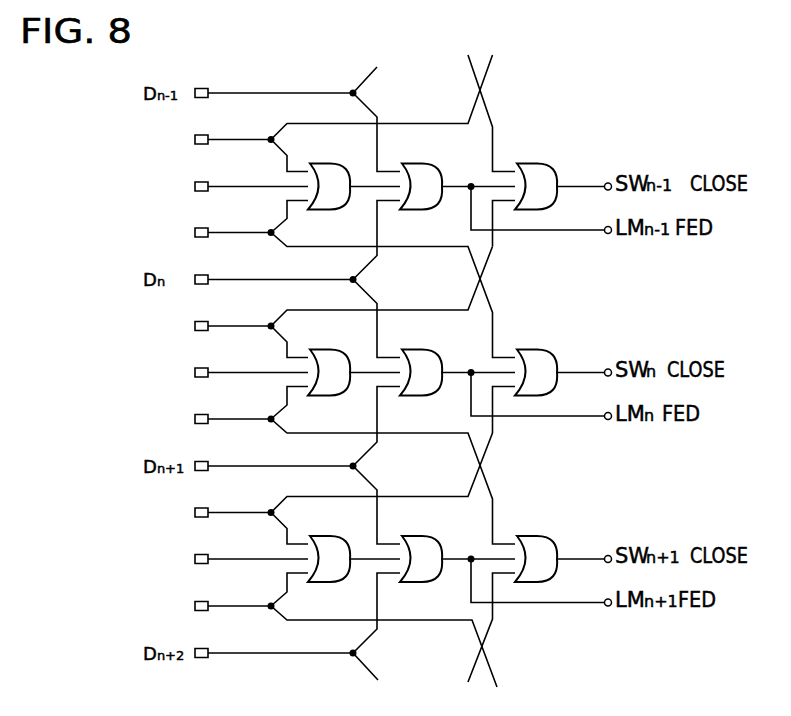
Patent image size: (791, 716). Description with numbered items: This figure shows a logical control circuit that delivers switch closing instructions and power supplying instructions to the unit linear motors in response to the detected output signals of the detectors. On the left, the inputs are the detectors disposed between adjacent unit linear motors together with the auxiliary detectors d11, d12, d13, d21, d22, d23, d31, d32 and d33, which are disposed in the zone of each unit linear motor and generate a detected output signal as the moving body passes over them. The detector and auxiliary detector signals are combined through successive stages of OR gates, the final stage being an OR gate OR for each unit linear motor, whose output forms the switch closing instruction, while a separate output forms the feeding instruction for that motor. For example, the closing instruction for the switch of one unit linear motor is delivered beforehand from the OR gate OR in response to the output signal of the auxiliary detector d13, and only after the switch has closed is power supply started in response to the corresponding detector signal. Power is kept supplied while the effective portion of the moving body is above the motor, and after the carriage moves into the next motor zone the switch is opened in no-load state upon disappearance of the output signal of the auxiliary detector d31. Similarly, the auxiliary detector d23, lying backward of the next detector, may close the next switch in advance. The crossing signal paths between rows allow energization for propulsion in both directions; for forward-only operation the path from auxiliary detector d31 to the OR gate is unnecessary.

The OR gate OR is at (540, 163).
The auxiliary detector d11 is at (318, 113).
The auxiliary detector d12 is at (225, 186).
The auxiliary detector d13 is at (329, 279).
The auxiliary detector d21 is at (318, 302).
The auxiliary detector d22 is at (225, 372).
The auxiliary detector d23 is at (329, 466).
The auxiliary detector d31 is at (318, 488).
The auxiliary detector d32 is at (225, 559).
The auxiliary detector d33 is at (320, 630).